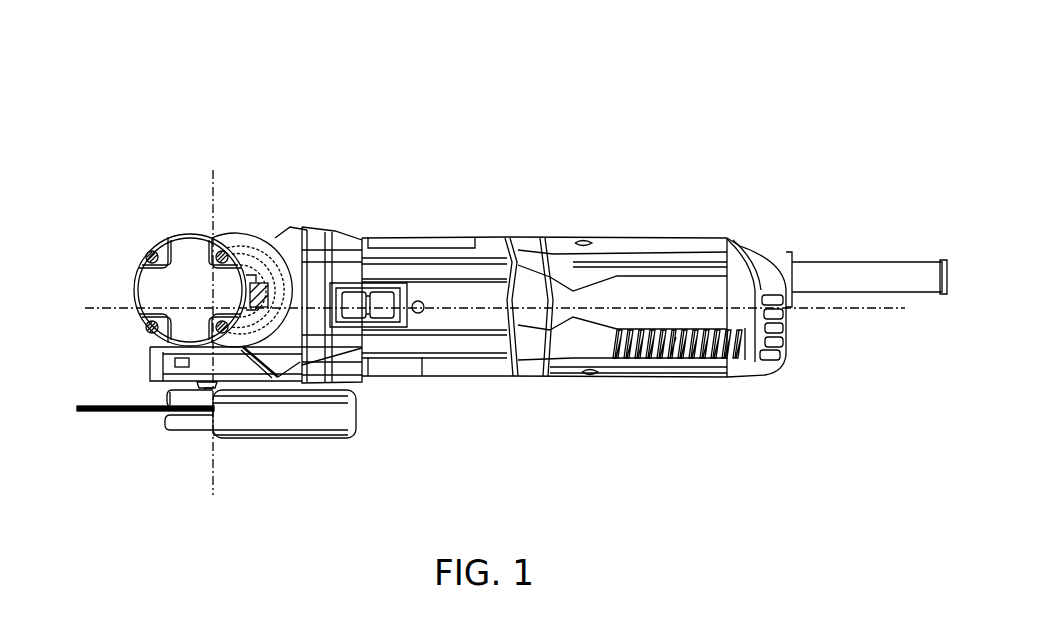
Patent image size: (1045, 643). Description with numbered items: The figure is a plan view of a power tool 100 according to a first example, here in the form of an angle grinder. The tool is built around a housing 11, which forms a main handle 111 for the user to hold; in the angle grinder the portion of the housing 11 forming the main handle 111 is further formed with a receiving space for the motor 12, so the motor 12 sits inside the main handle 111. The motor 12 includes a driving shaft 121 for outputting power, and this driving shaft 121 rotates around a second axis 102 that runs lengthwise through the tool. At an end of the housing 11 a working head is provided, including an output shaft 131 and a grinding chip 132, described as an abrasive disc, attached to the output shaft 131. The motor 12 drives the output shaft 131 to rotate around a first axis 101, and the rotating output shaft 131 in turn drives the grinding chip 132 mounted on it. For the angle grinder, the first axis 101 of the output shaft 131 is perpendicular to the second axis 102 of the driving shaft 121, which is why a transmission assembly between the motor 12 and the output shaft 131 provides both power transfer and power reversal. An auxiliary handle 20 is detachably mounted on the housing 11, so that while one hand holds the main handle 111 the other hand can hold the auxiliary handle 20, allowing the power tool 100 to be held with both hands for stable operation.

The power tool 100 is at (422, 106).
The first axis 101 is at (209, 216).
The second axis 102 is at (98, 303).
The auxiliary handle 20 is at (174, 249).
The housing 11 is at (298, 226).
The motor 12 is at (466, 245).
The main handle 111 is at (572, 242).
The driving shaft 121 is at (363, 378).
The output shaft 131 is at (210, 414).
The grinding chip 132 is at (100, 402).